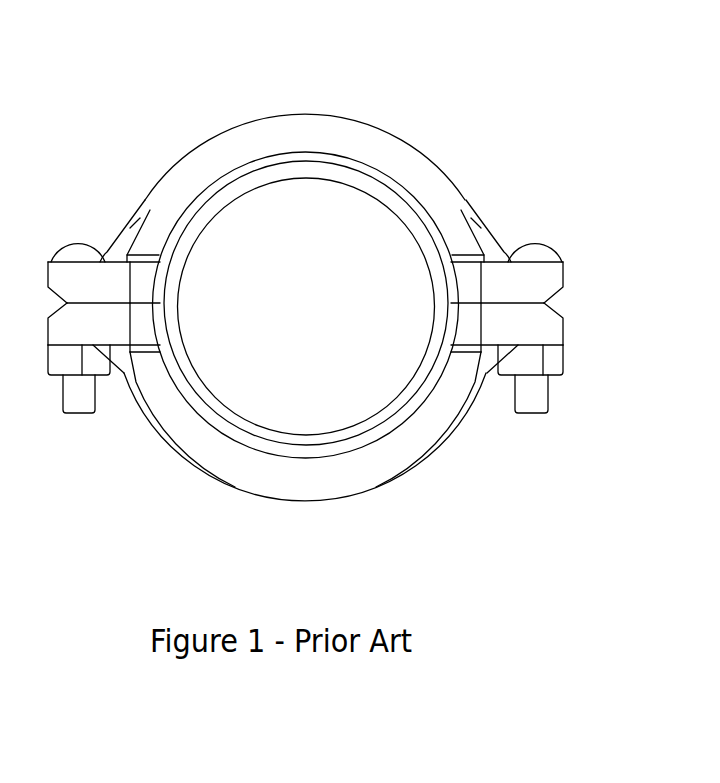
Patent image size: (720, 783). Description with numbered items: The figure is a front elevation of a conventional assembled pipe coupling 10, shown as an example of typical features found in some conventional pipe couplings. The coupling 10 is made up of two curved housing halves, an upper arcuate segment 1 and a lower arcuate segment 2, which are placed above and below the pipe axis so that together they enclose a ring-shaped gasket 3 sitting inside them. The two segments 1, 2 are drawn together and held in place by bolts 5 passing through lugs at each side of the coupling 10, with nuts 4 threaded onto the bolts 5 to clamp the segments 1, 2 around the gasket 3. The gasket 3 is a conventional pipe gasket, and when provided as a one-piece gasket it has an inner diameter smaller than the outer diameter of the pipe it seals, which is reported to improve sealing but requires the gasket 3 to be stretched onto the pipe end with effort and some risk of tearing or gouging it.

The coupling 10 is at (347, 273).
The upper arcuate segment 1 is at (397, 139).
The lower arcuate segment 2 is at (437, 440).
The gasket 3 is at (419, 206).
The nut 4 is at (563, 360).
The bolt 5 is at (566, 247).